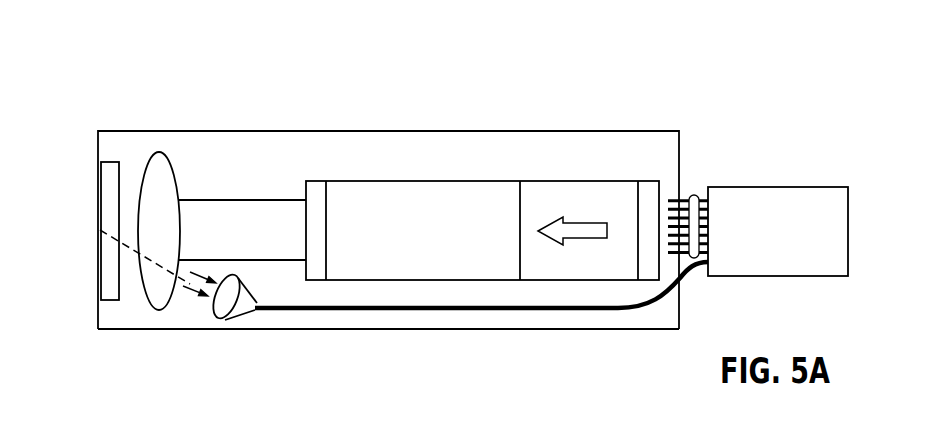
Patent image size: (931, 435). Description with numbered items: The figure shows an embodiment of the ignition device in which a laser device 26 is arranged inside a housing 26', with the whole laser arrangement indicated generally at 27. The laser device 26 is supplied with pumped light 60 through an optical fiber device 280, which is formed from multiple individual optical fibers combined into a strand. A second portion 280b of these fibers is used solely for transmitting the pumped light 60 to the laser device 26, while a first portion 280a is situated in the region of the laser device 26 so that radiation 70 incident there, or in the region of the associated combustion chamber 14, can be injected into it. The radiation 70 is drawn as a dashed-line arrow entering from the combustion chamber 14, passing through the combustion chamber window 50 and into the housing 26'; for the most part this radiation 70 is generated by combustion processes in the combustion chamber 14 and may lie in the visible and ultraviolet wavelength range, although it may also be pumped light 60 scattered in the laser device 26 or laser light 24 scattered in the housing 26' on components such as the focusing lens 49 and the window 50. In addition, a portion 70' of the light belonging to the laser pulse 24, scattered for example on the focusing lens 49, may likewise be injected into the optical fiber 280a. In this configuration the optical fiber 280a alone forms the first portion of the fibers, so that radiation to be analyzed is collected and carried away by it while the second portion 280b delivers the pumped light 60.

The combustion chamber 14 is at (54, 241).
The laser light 24 is at (230, 217).
The laser device 26 is at (482, 167).
The housing of laser device 26' is at (388, 382).
The sensor housing 27 is at (320, 100).
The focusing lens 49 is at (159, 167).
The combustion chamber window 50 is at (111, 178).
The pumped light 60 is at (583, 233).
The radiation 70 is at (145, 299).
The scattered portion of light 70' is at (189, 319).
The optical fiber device 280 is at (781, 208).
The first portion of optical fibers 280a is at (447, 320).
The second portion of optical fibers 280b is at (693, 197).